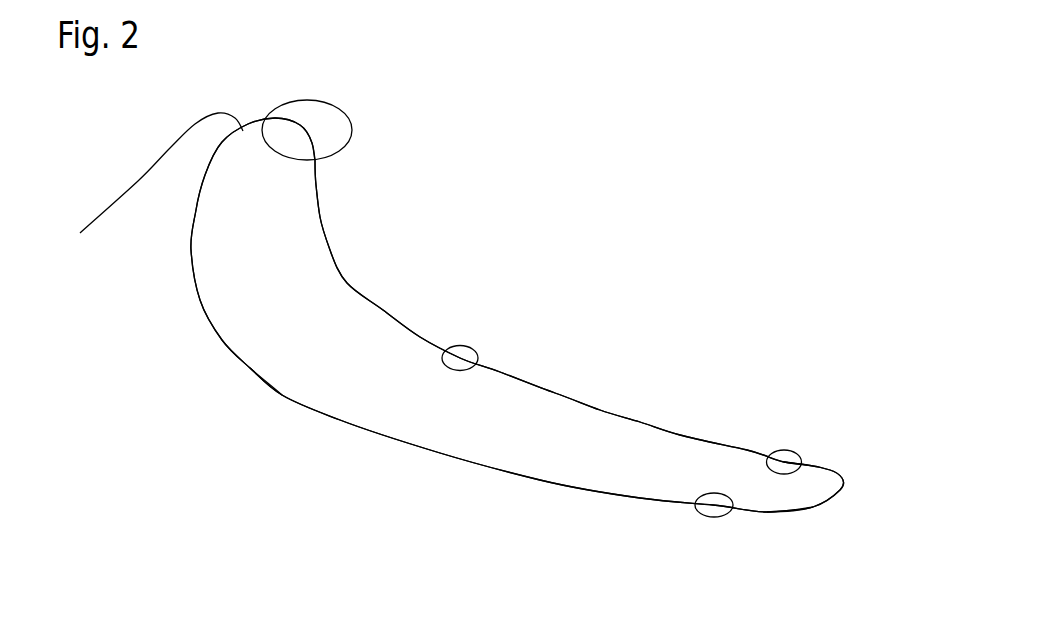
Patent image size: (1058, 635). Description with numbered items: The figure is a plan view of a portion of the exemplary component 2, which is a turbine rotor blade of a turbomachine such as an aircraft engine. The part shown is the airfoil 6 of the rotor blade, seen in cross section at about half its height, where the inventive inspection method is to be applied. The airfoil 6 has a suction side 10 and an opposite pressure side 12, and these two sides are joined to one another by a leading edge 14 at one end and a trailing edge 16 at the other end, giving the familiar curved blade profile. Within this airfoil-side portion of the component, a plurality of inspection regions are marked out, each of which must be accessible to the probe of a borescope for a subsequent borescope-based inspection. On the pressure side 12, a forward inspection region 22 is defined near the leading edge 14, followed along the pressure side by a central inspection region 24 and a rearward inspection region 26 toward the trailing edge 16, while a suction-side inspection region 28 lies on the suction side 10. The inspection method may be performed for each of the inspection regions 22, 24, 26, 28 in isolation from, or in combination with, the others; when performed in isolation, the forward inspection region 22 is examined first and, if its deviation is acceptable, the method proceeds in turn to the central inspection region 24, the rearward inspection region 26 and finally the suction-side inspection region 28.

The component 2 is at (146, 108).
The airfoil 6 is at (238, 276).
The suction side 10 is at (282, 395).
The pressure side 12 is at (555, 393).
The leading edge 14 is at (145, 185).
The trailing edge 16 is at (843, 488).
The inspection region 22 is at (352, 128).
The central inspection region 24 is at (478, 353).
The rearward inspection region 26 is at (800, 455).
The suction-side inspection region 28 is at (722, 516).